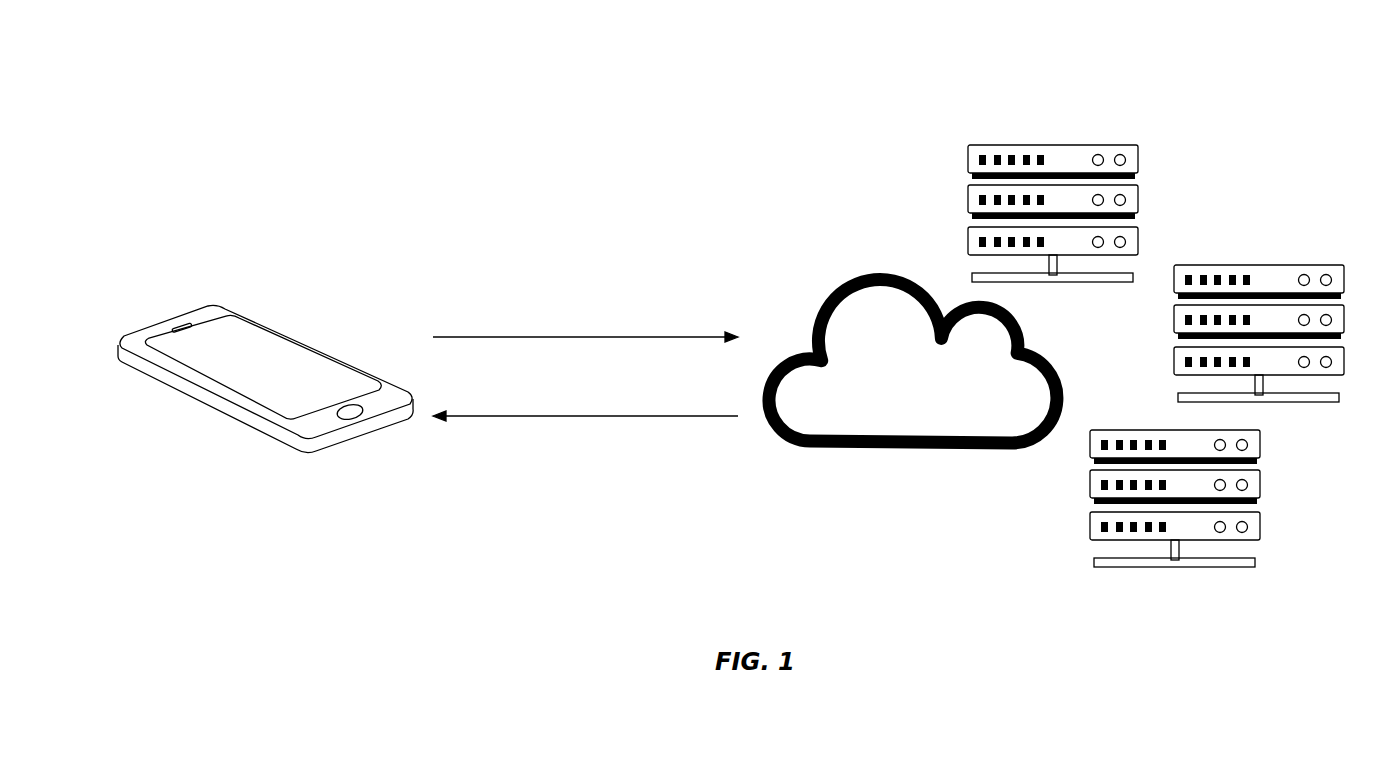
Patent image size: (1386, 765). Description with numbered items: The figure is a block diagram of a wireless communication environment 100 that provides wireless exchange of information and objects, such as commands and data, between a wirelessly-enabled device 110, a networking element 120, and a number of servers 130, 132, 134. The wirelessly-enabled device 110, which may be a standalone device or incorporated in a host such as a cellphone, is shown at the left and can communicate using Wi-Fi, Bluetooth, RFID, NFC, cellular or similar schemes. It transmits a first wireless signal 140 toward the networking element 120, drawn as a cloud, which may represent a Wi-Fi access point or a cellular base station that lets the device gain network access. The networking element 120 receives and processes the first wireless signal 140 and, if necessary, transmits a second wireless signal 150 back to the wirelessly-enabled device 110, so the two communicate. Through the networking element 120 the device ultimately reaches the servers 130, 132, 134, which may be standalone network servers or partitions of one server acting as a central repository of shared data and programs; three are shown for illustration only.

The wireless communication environment 100 is at (486, 164).
The wirelessly-enabled device 110 is at (235, 311).
The networking element 120 is at (915, 452).
The server 130 is at (1046, 145).
The server 132 is at (1220, 265).
The server 134 is at (1099, 430).
The first wireless signal 140 is at (585, 336).
The second wireless signal 150 is at (597, 417).